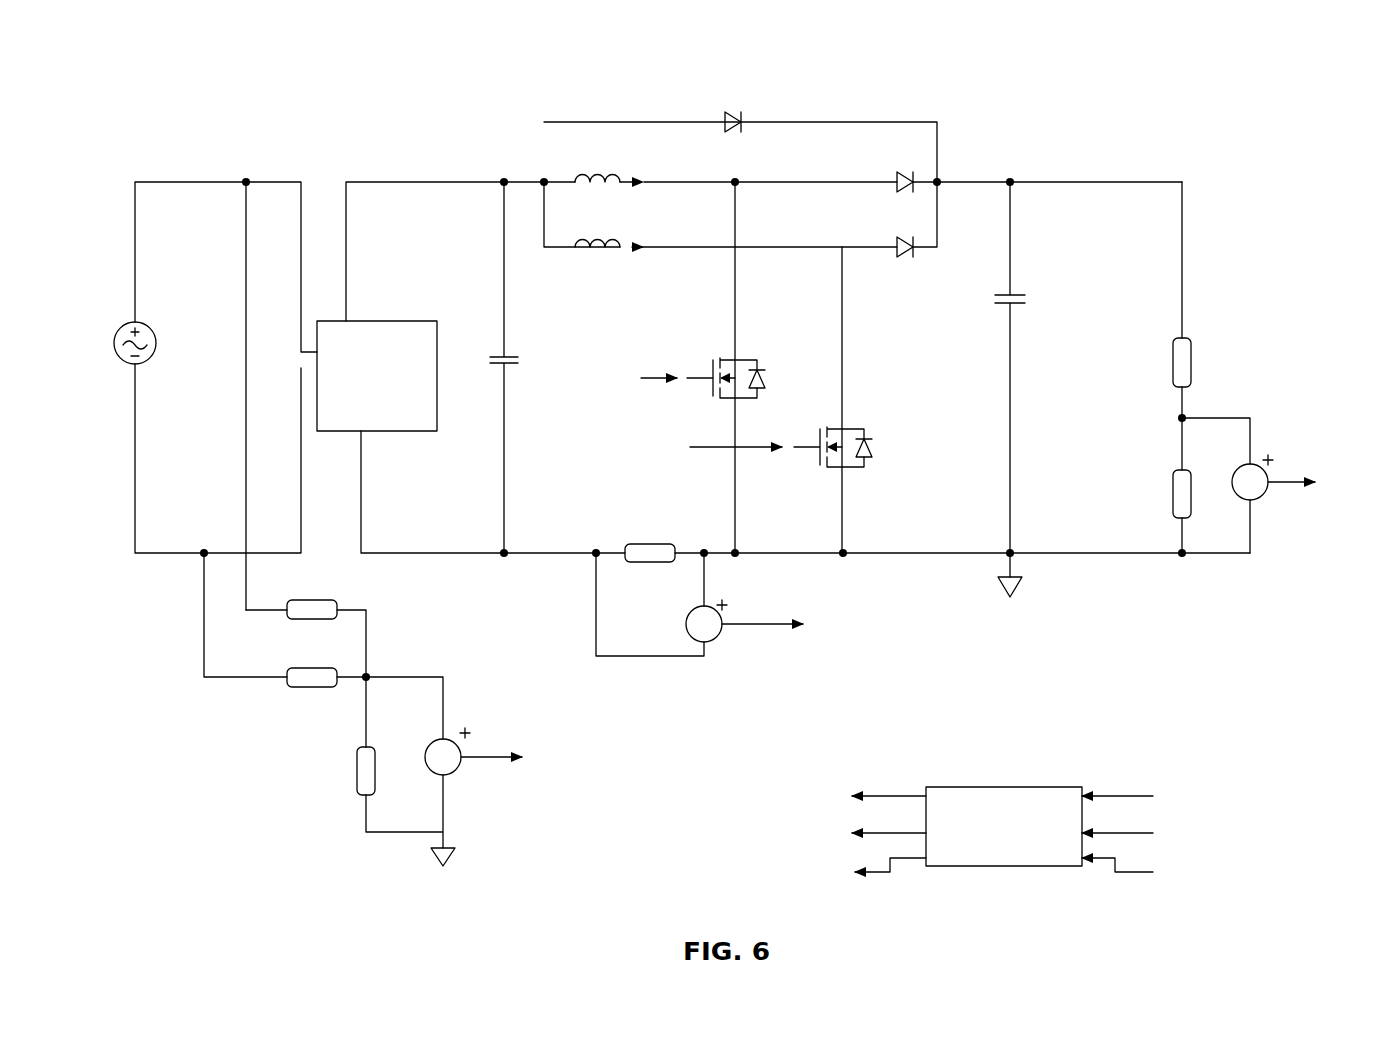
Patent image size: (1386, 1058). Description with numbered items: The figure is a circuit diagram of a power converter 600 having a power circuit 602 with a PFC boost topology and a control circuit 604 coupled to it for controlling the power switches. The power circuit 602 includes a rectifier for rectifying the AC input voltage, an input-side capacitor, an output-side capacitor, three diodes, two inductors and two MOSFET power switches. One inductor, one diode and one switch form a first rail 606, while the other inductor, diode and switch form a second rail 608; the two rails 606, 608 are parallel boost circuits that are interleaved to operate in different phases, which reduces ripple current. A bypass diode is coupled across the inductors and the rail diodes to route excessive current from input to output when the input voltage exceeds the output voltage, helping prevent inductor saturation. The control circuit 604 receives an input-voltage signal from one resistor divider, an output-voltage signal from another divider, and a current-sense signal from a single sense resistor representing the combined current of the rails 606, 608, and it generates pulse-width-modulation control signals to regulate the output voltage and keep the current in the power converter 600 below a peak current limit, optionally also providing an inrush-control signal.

The power converter 600 is at (733, 467).
The power circuit 602 is at (972, 165).
The control circuit 604 is at (995, 787).
The rail 606 is at (708, 295).
The rail 608 is at (855, 355).